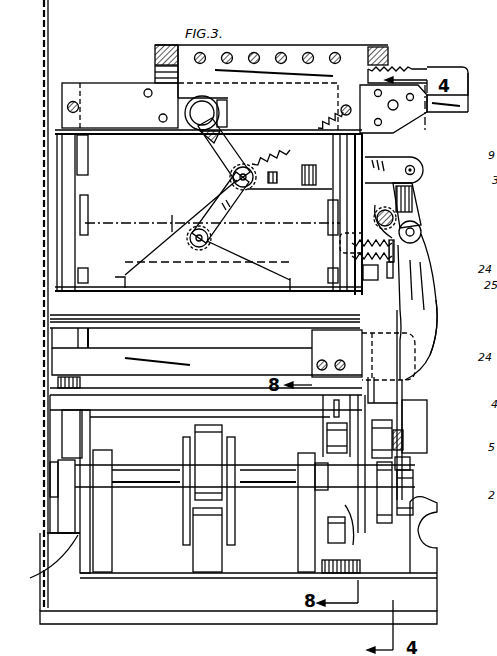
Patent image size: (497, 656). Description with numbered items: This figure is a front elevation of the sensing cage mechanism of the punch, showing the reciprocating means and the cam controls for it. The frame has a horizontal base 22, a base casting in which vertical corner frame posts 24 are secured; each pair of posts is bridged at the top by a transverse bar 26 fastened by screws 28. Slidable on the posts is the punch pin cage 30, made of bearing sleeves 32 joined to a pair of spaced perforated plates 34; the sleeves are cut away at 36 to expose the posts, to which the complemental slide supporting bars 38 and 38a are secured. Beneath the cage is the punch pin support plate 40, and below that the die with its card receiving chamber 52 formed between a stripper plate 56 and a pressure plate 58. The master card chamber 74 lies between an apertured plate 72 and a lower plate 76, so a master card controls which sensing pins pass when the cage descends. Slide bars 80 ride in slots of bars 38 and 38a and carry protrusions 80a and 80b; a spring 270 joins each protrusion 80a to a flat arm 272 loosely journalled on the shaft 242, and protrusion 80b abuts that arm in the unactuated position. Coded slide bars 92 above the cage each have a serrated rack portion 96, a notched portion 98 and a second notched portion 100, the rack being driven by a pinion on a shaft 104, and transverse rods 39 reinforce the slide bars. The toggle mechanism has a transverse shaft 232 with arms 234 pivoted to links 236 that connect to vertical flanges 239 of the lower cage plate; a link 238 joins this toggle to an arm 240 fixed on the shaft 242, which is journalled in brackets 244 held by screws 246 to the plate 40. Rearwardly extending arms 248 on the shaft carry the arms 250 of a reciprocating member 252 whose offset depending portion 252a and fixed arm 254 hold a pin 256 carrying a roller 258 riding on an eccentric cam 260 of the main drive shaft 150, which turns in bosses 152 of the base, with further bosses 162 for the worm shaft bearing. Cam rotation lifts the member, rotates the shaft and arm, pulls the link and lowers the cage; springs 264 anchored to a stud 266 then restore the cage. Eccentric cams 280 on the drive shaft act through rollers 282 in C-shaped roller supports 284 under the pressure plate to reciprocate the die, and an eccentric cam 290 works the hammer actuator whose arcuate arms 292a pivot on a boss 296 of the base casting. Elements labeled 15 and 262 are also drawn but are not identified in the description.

The frame 15 is at (46, 300).
The horizontal base 22 is at (82, 598).
The corner frame posts 24 is at (67, 510).
The transverse bar 26 is at (100, 97).
The screws 28 is at (76, 103).
The punch pin cage 30 is at (369, 158).
The bearing sleeves 32 is at (66, 158).
The perforated plates 34 is at (143, 135).
The cut-away portion 36 is at (88, 176).
The slide supporting bar 38 is at (88, 215).
The complemental slide supporting bar 38a is at (84, 268).
The transverse rods 39 is at (166, 45).
The punch pin support plate 40 is at (68, 367).
The card receiving chamber 52 is at (172, 395).
The stripper plate 56 is at (120, 388).
The pressure plate 58 is at (148, 400).
The plate of master card chamber 72 is at (231, 318).
The master card chamber 74 is at (270, 327).
The lower plate of master card chamber 76 is at (203, 330).
The slide bar 80 is at (137, 232).
The protrusion 80a is at (343, 242).
The protrusion 80b is at (372, 282).
The slide bar 92 is at (467, 67).
The serrated rack portion 96 is at (405, 68).
The notched portion 98 is at (440, 67).
The second notched portion 100 is at (452, 108).
The shaft 104 is at (335, 53).
The main drive shaft 150 is at (133, 487).
The bosses 152 is at (112, 525).
The bosses 162 is at (428, 508).
The transverse shaft 232 is at (210, 112).
The arms 234 is at (220, 150).
The links 236 is at (226, 205).
The link 238 is at (308, 173).
The vertical flanges 239 is at (270, 262).
The arm 240 is at (413, 177).
The shaft 242 is at (413, 200).
The brackets 244 is at (416, 363).
The screws 246 is at (313, 362).
The rearwardly extending arms 248 is at (412, 214).
The arms of reciprocating member 250 is at (428, 303).
The reciprocating member 252 is at (458, 314).
The offset depending portion 252a is at (403, 403).
The fixed arm 254 is at (402, 392).
The pin 256 is at (405, 440).
The roller 258 is at (410, 421).
The eccentric cam 260 is at (392, 488).
The gear 262 is at (385, 478).
The springs 264 is at (330, 116).
The stud 266 is at (396, 109).
The spring 270 is at (400, 255).
The flat arm 272 is at (391, 279).
The eccentric cams 280 is at (190, 544).
The rollers 282 is at (329, 437).
The roller supports 284 is at (332, 433).
The eccentric cam 290 is at (223, 431).
The arcuate arms 292a is at (183, 448).
The boss 296 is at (200, 552).